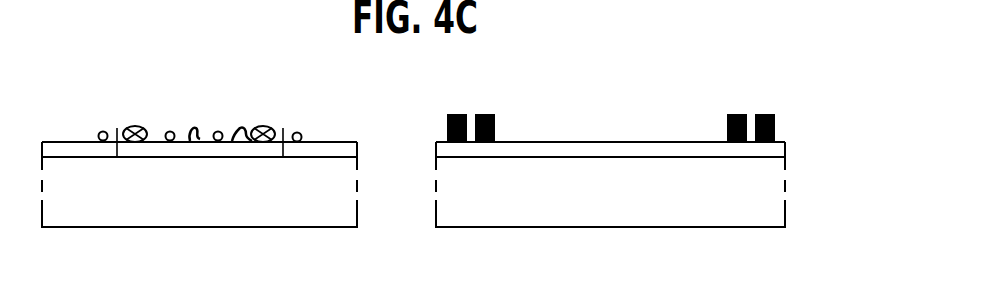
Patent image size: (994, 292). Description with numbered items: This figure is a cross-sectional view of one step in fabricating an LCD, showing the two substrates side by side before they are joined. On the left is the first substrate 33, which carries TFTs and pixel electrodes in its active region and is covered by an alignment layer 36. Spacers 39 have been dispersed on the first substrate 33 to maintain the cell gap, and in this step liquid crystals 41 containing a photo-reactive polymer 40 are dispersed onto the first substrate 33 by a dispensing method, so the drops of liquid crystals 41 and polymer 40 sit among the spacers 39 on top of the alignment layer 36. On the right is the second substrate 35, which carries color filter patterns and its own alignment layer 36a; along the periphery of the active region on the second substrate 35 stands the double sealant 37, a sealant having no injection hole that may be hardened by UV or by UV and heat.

The first substrate 33 is at (350, 187).
The second substrate 35 is at (780, 190).
The alignment layer 36 is at (350, 150).
The alignment layer 36a is at (780, 150).
The double sealant 37 is at (776, 122).
The spacer 39 is at (263, 128).
The photo-reactive polymer 40 is at (165, 124).
The liquid crystals 41 is at (301, 132).